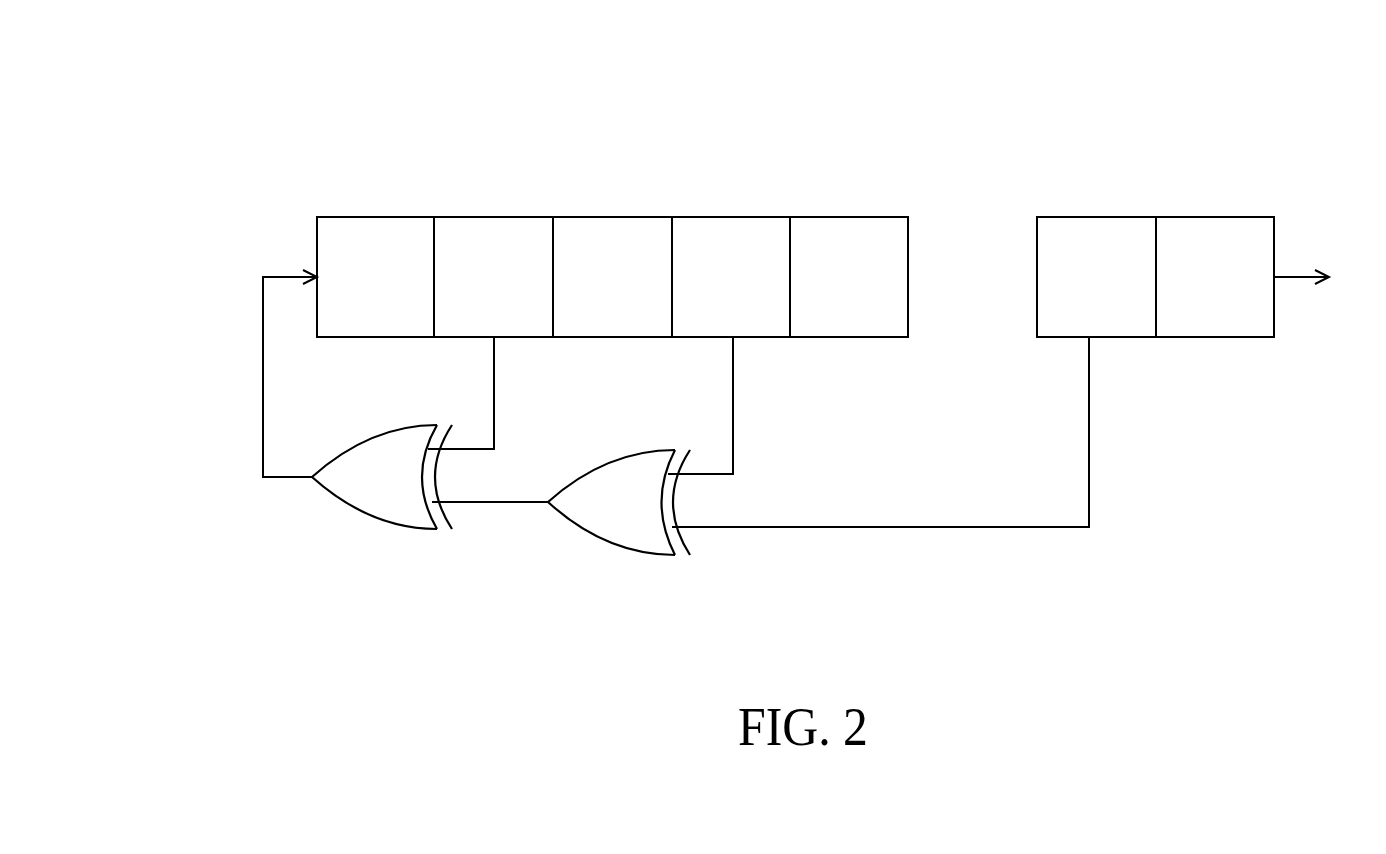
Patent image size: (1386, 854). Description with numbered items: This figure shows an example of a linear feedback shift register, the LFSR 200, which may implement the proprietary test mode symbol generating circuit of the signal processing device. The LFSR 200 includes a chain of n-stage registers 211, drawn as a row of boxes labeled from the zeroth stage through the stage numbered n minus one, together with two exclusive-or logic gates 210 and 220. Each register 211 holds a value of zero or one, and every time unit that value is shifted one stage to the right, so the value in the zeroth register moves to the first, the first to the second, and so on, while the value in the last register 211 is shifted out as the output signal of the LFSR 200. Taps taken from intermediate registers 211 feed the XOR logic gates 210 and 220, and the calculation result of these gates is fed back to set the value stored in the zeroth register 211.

The linear feedback shift register 200 is at (274, 104).
The registers 211 is at (795, 372).
The XOR logic gate 210 is at (385, 425).
The XOR logic gate 220 is at (622, 450).